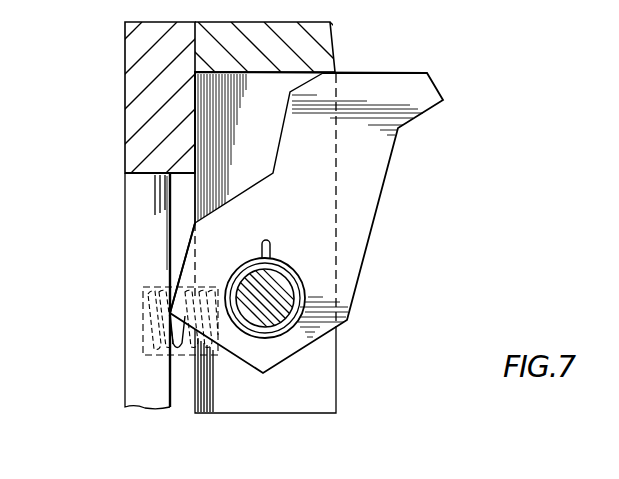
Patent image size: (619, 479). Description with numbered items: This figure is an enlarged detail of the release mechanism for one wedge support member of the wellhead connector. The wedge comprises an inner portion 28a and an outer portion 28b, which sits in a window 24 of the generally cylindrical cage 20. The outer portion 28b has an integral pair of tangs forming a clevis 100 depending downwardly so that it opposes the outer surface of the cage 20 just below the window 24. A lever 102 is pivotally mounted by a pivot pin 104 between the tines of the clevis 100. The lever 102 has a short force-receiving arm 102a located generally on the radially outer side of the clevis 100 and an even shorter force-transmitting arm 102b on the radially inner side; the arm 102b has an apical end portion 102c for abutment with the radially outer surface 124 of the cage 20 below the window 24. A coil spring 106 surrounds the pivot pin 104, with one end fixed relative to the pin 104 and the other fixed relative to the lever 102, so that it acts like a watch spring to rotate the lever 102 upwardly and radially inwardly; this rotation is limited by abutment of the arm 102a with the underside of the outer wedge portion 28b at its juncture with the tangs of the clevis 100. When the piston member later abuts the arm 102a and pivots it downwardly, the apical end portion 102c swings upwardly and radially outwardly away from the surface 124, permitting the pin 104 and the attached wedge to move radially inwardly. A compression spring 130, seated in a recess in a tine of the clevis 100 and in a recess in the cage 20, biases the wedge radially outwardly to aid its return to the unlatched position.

The cage 20 is at (138, 247).
The window 24 is at (145, 172).
The inner portion 28a is at (143, 93).
The outer portion 28b is at (320, 47).
The clevis 100 is at (320, 395).
The lever 102 is at (369, 301).
The force-receiving arm 102a is at (380, 163).
The force-transmitting arm 102b is at (184, 350).
The apical end portion 102c is at (168, 312).
The pivot pin 104 is at (290, 318).
The coil spring 106 is at (295, 272).
The radially outer surface 124 is at (170, 208).
The compression spring 130 is at (153, 338).